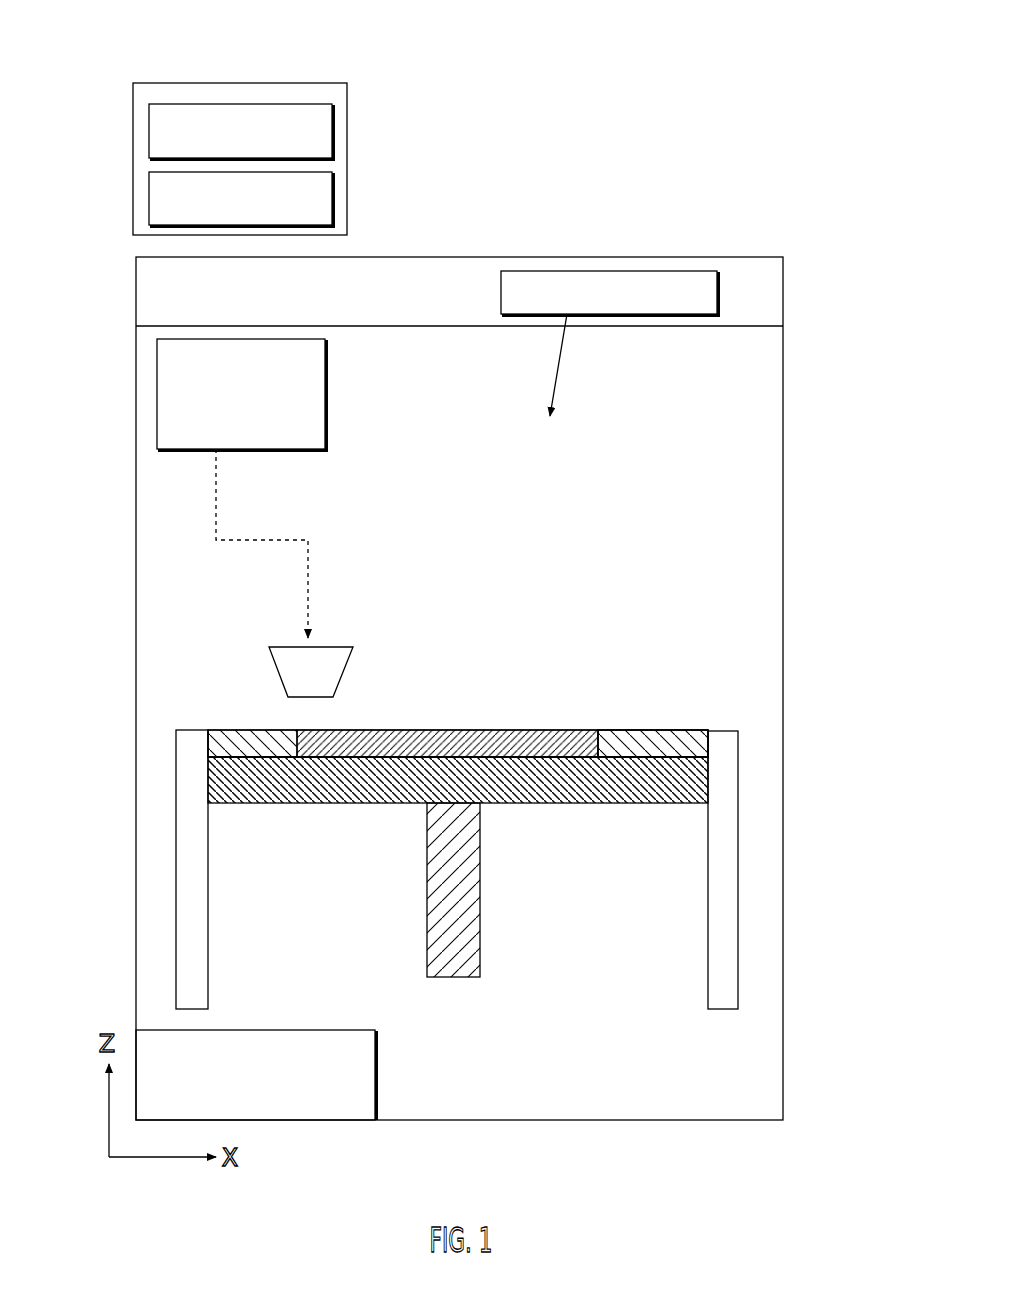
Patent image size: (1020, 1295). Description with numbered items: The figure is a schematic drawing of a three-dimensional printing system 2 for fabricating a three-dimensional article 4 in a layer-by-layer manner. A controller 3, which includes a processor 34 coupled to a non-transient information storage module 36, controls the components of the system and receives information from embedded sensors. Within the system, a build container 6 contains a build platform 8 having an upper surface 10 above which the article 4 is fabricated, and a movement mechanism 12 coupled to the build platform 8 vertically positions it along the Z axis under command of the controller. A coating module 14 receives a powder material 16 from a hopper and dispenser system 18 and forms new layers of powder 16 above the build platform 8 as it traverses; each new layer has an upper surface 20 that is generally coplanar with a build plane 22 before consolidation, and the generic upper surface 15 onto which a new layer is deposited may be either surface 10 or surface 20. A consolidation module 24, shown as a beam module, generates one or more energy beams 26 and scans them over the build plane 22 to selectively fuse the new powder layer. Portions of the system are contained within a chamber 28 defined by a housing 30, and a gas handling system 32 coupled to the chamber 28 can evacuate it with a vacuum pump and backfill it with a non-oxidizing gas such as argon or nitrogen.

The three-dimensional printing system 2 is at (551, 65).
The controller 3 is at (224, 83).
The processor 34 is at (333, 132).
The non-transient information storage module 36 is at (333, 199).
The consolidation module 24 is at (613, 271).
The energy beam 26 is at (561, 358).
The chamber 28 is at (673, 502).
The housing 30 is at (784, 481).
The hopper and dispenser system 18 is at (157, 391).
The coating module 14 is at (278, 670).
The powder material 16 is at (240, 742).
The 3D article 4 is at (528, 732).
The upper surface of new powder layer 20 is at (617, 732).
The build plane 22 is at (653, 700).
The upper surface of build platform 10 is at (637, 755).
The upper surface 15 is at (532, 685).
The build platform 8 is at (678, 775).
The build container 6 is at (740, 813).
The movement mechanism 12 is at (472, 897).
The gas handling system 32 is at (162, 1028).